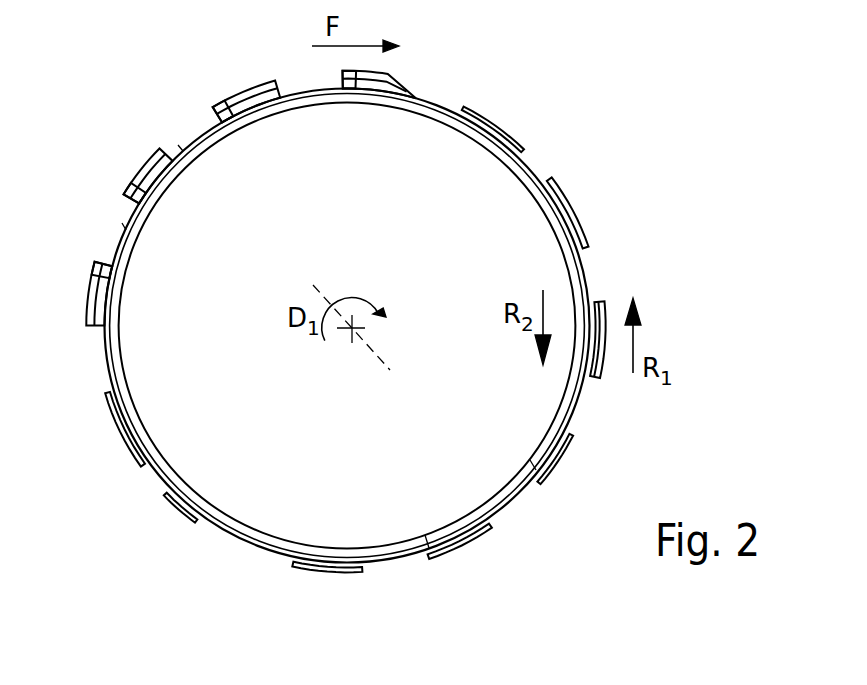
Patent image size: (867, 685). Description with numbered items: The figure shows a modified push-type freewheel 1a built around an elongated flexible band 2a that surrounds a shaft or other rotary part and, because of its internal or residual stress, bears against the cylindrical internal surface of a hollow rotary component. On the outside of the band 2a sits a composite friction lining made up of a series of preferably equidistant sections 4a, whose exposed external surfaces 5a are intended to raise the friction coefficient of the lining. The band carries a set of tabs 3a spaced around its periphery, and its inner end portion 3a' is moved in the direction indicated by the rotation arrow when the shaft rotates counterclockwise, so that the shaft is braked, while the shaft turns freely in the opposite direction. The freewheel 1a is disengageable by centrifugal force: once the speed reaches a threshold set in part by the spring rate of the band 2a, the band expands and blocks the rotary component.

The freewheel 1a is at (560, 93).
The elongated flexible band 2a is at (445, 530).
The tabs 3a is at (337, 322).
The inner end portion of the band 3a' is at (614, 378).
The sections of composite friction lining 4a is at (567, 452).
The exposed external surfaces 5a is at (556, 498).